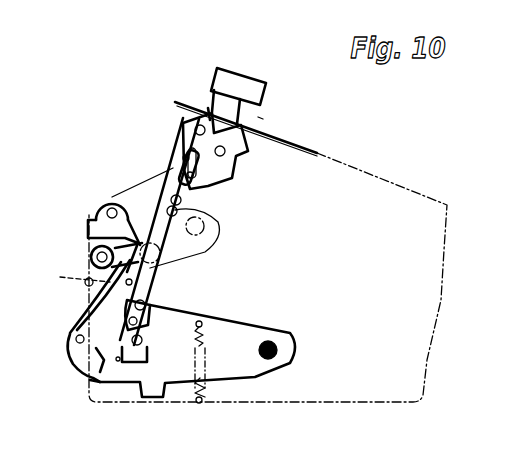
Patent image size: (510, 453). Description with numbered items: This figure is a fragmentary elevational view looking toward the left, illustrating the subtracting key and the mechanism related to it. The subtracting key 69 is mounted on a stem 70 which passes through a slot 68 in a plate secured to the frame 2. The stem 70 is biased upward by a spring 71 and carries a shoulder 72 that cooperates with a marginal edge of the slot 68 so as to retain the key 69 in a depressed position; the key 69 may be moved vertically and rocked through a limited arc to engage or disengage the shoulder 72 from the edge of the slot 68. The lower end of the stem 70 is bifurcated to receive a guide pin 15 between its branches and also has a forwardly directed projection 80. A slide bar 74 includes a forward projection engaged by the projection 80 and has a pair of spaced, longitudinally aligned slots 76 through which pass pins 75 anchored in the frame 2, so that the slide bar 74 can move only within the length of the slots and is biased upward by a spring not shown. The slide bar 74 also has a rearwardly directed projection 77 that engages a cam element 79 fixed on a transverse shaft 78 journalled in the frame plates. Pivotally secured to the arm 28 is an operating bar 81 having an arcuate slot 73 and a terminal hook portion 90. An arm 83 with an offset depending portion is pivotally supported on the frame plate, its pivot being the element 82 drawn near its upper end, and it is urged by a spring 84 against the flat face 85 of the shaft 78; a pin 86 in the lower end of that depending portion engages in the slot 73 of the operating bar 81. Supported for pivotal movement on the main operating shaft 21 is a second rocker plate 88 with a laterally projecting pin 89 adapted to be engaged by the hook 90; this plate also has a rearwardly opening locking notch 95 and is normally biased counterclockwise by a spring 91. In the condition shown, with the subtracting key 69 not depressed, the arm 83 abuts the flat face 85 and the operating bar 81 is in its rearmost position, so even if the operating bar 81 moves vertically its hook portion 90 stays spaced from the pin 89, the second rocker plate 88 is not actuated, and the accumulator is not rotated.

The frame 2 is at (362, 188).
The guide pin 15 is at (152, 180).
The main operating shaft 21 is at (276, 357).
The arm 28 is at (204, 241).
The slot 68 is at (263, 114).
The subtracting key 69 is at (245, 83).
The stem 70 is at (183, 121).
The spring 71 is at (260, 136).
The shoulder 72 is at (208, 108).
The arcuate slot 73 is at (76, 339).
The slide bar 74 is at (143, 227).
The pins 75 is at (183, 213).
The slots 76 is at (200, 192).
The rearwardly directed projection 77 is at (146, 226).
The transverse shaft 78 is at (90, 258).
The cam element 79 is at (95, 232).
The forwardly directed projection 80 is at (213, 167).
The operating bar 81 is at (71, 352).
The pivot pin 82 is at (111, 208).
The arm 83 is at (97, 214).
The spring 84 is at (87, 287).
The flat face 85 is at (75, 272).
The pin 86 is at (133, 284).
The second rocker plate 88 is at (285, 342).
The pin 89 is at (138, 346).
The hook portion 90 is at (98, 364).
The spring 91 is at (204, 393).
The locking notch 95 is at (118, 361).